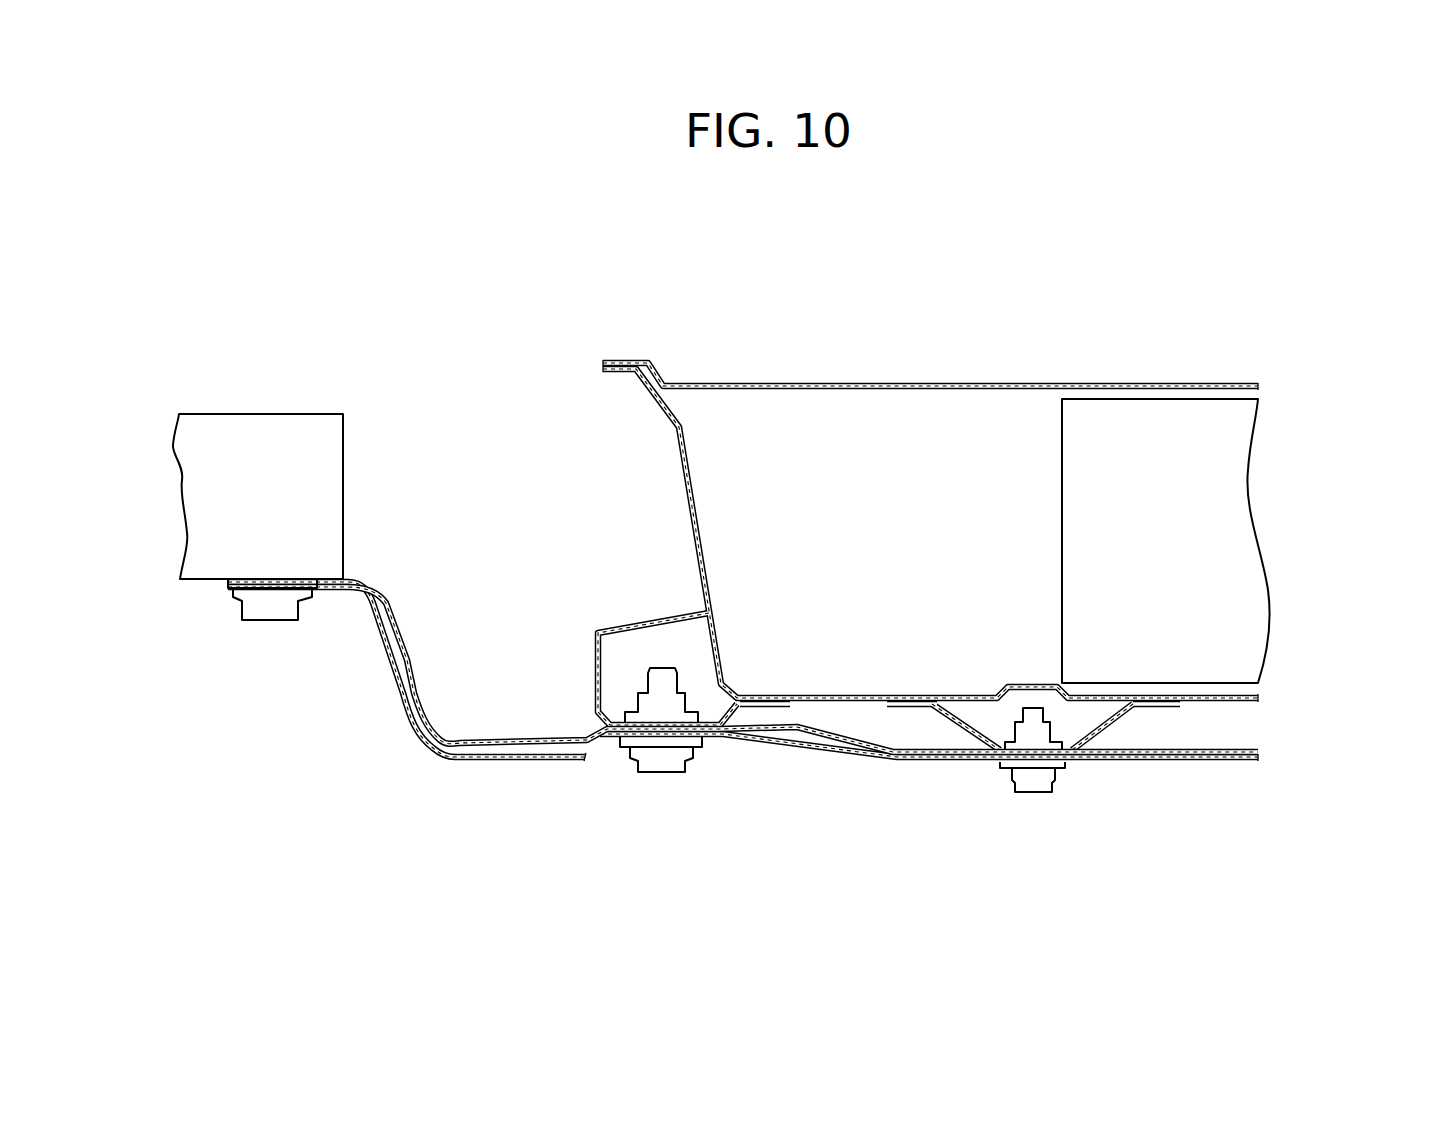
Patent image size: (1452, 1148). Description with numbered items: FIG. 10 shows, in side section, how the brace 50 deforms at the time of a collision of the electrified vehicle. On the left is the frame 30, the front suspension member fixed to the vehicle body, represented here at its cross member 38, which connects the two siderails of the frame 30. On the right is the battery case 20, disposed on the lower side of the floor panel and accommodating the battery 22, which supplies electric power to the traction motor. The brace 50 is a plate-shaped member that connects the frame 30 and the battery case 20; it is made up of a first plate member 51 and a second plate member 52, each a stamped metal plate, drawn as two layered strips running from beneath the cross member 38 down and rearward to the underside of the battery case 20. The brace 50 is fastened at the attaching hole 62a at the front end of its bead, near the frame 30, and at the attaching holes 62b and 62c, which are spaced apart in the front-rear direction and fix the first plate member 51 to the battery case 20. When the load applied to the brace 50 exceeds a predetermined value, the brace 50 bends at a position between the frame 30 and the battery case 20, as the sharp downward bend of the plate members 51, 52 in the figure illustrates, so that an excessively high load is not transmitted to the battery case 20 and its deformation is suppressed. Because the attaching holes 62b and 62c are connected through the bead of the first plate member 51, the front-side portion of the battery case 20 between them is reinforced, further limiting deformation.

The battery case 20 is at (996, 333).
The battery 22 is at (1235, 607).
The frame 30 is at (270, 453).
The cross member 38 is at (280, 440).
The brace 50 is at (743, 713).
The first plate member 51 is at (405, 655).
The second plate member 52 is at (388, 676).
The attaching hole 62a is at (277, 654).
The attaching hole 62b is at (673, 801).
The attaching hole 62c is at (1043, 822).